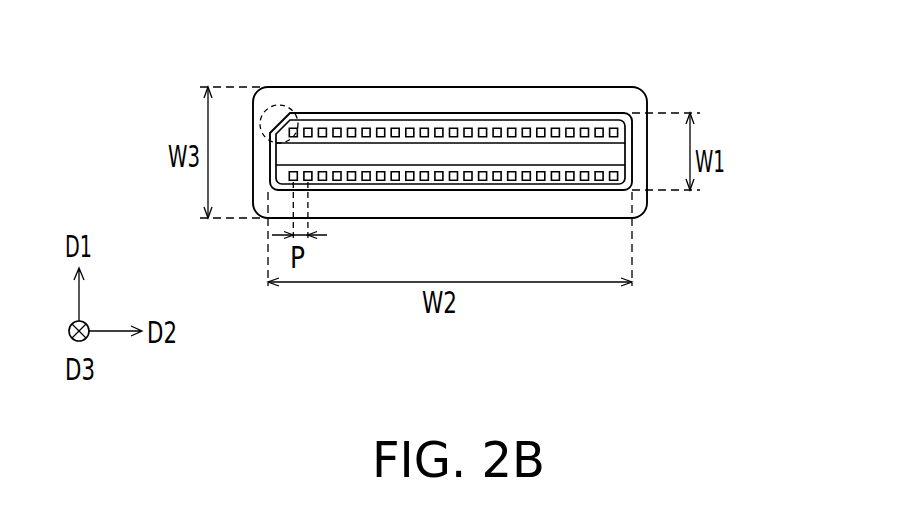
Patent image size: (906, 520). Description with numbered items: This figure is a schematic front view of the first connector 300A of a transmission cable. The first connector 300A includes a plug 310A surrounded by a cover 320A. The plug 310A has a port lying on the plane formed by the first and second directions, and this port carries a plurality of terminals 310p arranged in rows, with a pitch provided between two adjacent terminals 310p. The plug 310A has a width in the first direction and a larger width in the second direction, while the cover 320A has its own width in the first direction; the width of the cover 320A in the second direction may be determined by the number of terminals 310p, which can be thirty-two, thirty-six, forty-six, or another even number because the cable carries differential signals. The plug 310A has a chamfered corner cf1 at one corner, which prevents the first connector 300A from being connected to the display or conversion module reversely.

The first connector 300A is at (504, 175).
The plug 310A is at (451, 144).
The cover 320A is at (408, 98).
The terminals 310p is at (539, 180).
The chamfered corner cf1 is at (287, 105).